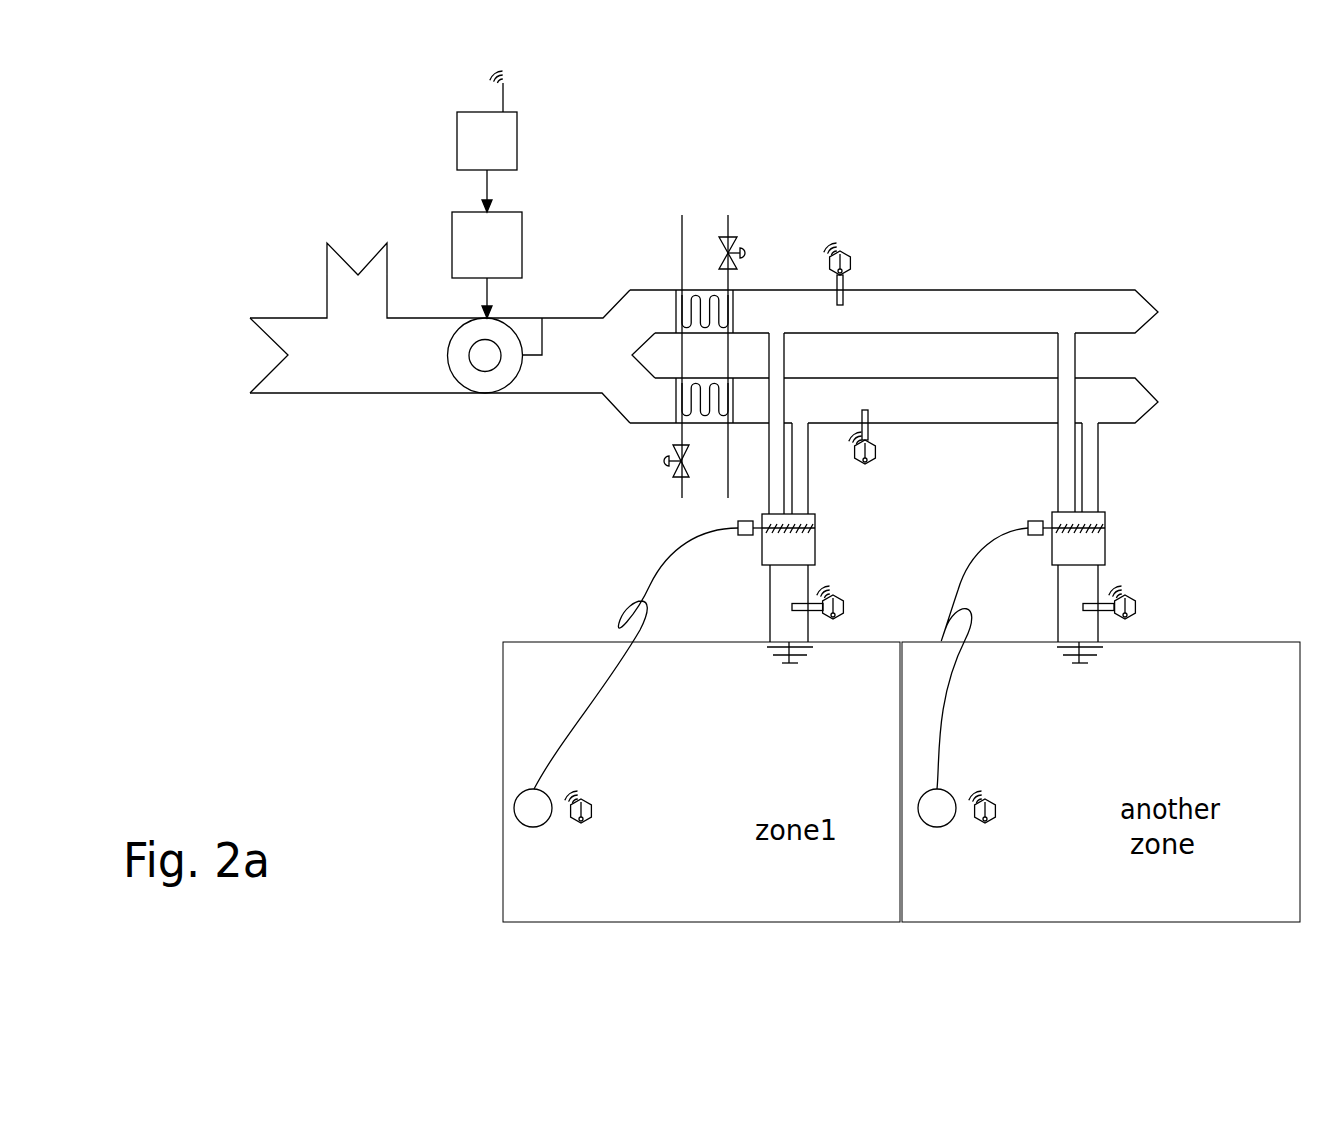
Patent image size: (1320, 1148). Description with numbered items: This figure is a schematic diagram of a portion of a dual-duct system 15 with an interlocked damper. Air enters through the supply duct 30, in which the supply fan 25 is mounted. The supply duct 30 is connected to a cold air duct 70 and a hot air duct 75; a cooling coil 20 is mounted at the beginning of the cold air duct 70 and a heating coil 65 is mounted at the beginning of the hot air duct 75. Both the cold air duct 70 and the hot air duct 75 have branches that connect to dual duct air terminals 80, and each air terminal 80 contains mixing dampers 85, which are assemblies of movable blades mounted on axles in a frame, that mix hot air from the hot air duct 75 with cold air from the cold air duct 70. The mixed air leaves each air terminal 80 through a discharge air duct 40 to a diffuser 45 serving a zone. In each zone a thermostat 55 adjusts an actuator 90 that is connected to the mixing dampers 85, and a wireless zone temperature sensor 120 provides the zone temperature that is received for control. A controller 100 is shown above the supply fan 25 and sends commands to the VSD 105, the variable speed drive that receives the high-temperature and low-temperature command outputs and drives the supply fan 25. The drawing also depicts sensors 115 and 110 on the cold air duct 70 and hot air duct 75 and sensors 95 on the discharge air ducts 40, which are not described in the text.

The dual-duct system 15 is at (566, 494).
The cooling coil 20 is at (675, 300).
The supply fan 25 is at (453, 337).
The supply duct 30 is at (548, 395).
The discharge air duct 40 is at (769, 587).
The diffuser 45 is at (802, 658).
The thermostat 55 is at (541, 827).
The heating coil 65 is at (675, 405).
The cold air duct 70 is at (938, 288).
The hot air duct 75 is at (933, 427).
The dual duct air terminal 80 is at (815, 515).
The mixing damper 85 is at (815, 528).
The actuator 90 is at (740, 536).
The zone duct sensor 95 is at (842, 615).
The controller 100 is at (516, 136).
The VSD 105 is at (522, 228).
The cold deck sensor 110 is at (872, 452).
The hot deck sensor 115 is at (846, 255).
The wireless zone temperature sensor 120 is at (590, 824).